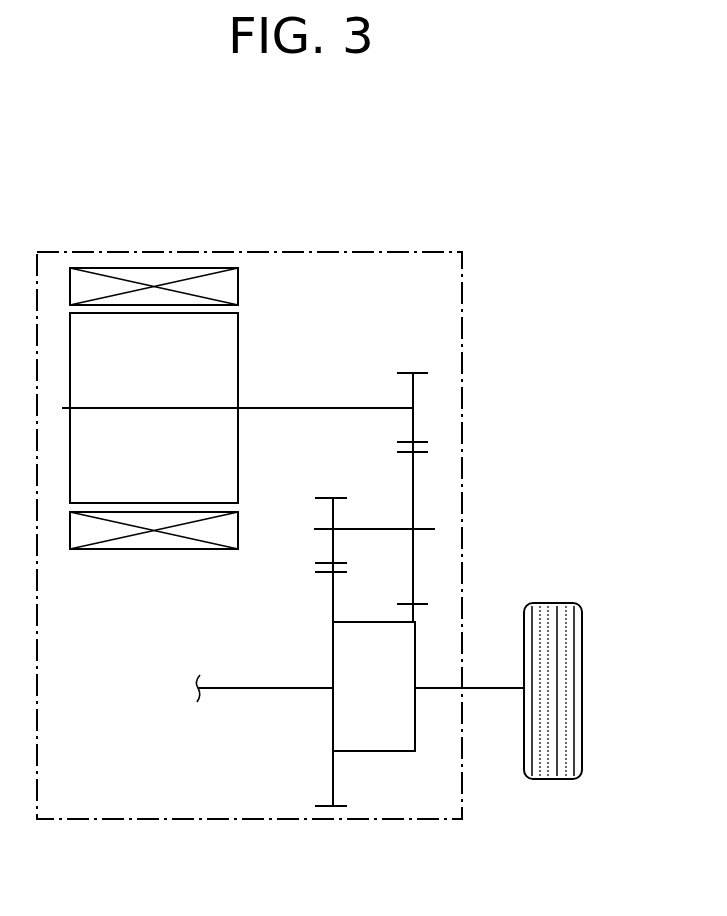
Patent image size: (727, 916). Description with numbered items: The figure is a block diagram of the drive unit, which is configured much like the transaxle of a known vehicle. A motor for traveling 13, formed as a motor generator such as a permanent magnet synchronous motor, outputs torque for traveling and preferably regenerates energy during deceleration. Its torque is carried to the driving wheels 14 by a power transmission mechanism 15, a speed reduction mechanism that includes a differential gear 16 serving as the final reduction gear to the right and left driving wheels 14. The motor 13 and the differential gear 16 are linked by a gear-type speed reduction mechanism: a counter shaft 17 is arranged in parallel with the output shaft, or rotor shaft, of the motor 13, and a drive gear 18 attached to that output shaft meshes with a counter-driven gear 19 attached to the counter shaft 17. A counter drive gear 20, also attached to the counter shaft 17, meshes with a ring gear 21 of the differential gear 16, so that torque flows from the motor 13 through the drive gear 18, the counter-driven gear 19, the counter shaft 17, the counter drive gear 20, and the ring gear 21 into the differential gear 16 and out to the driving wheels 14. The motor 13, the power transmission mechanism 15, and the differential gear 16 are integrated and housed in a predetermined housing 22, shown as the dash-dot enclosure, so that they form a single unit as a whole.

The motor for traveling 13 is at (252, 294).
The driving wheel 14 is at (553, 602).
The power transmission mechanism 15 is at (440, 490).
The differential gear 16 is at (398, 752).
The counter shaft 17 is at (428, 531).
The drive gear 18 is at (416, 371).
The counter-driven gear 19 is at (413, 470).
The counter drive gear 20 is at (337, 496).
The ring gear 21 is at (337, 808).
The housing 22 is at (432, 250).